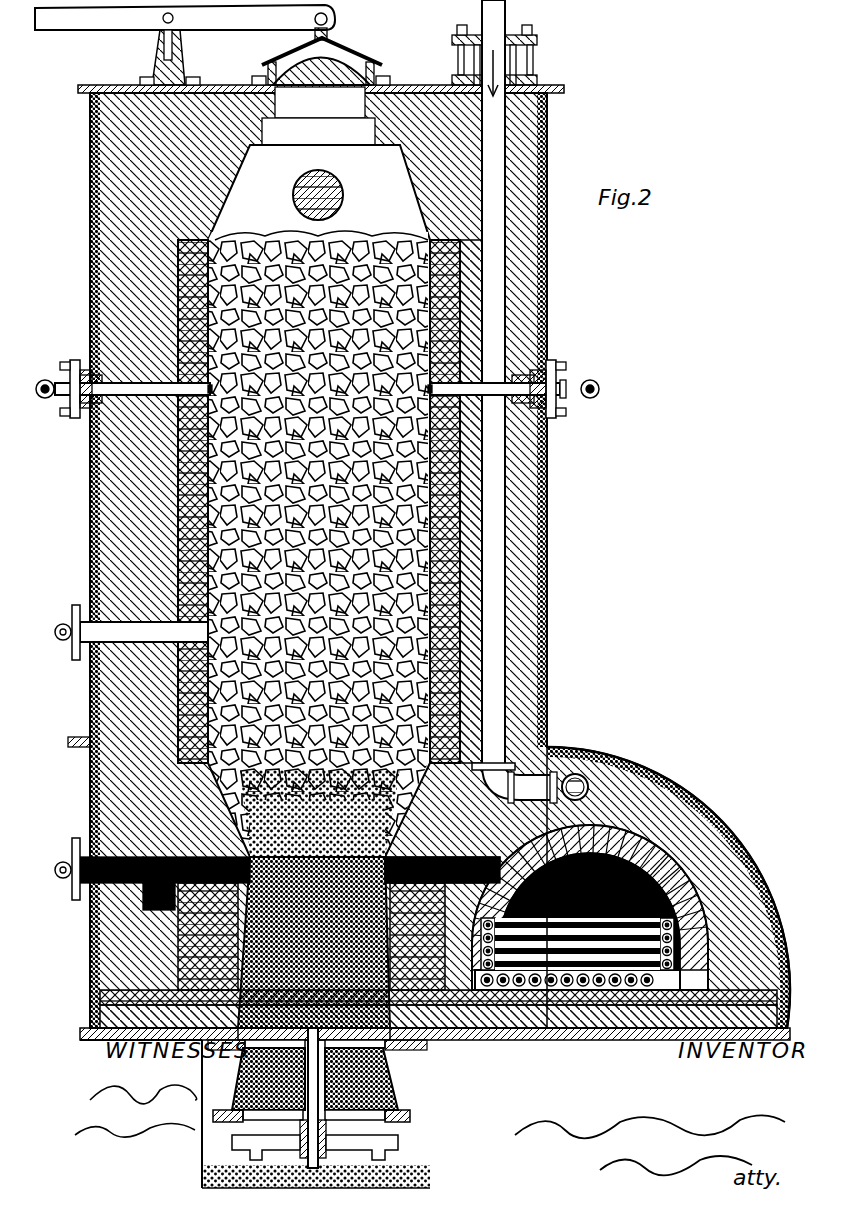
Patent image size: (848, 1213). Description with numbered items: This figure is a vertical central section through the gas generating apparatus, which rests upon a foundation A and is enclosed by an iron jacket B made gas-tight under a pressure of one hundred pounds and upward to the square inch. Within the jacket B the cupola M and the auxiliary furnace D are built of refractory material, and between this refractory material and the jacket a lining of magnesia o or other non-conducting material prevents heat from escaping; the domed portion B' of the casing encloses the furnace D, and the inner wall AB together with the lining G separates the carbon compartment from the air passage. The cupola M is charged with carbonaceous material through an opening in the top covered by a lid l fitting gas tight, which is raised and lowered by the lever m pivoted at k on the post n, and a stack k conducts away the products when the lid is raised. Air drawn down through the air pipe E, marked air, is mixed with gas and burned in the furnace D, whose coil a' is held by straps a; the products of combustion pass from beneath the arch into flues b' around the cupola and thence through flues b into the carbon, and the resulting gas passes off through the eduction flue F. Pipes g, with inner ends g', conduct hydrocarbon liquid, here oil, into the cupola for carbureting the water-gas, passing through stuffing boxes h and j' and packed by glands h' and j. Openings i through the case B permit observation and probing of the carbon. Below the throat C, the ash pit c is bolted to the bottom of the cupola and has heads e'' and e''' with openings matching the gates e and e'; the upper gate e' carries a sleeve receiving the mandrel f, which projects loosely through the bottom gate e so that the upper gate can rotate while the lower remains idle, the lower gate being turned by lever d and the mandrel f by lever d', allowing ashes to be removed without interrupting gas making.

The iron jacket B is at (421, 560).
The domed extension of furnace body B' is at (668, 887).
The magnesia lining o is at (92, 193).
The cupola M is at (430, 490).
The refractory lining wall G is at (178, 545).
The inner wall between chamber and air pipe AB is at (525, 501).
The air pipe E is at (488, 588).
The air inlet air is at (496, 105).
The eduction pipe F is at (329, 195).
The lid l is at (340, 62).
The lever m is at (185, 31).
The stack k is at (360, 22).
The fulcrum post n is at (155, 52).
The gland j is at (503, 55).
The stuffing box j' is at (506, 72).
The hydrocarbon pipe g is at (321, 405).
The pipe inner end g' is at (318, 404).
The stuffing box h is at (322, 371).
The gland h' is at (328, 366).
The oil inlet oil is at (596, 370).
The observation opening i is at (70, 640).
The throat chamber C is at (314, 942).
The flue b is at (321, 886).
The flue b' is at (156, 914).
The furnace D is at (670, 880).
The strap a is at (599, 967).
The coil a' is at (606, 935).
The foundation A is at (271, 1114).
The upper gate e' is at (314, 1019).
The upper head e''' is at (317, 1045).
The ash pit c is at (237, 1085).
The bottom gate e is at (314, 1059).
The bottom head e'' is at (321, 1127).
The mandrel f is at (313, 1098).
The lever d is at (266, 1150).
The lever d' is at (362, 1143).